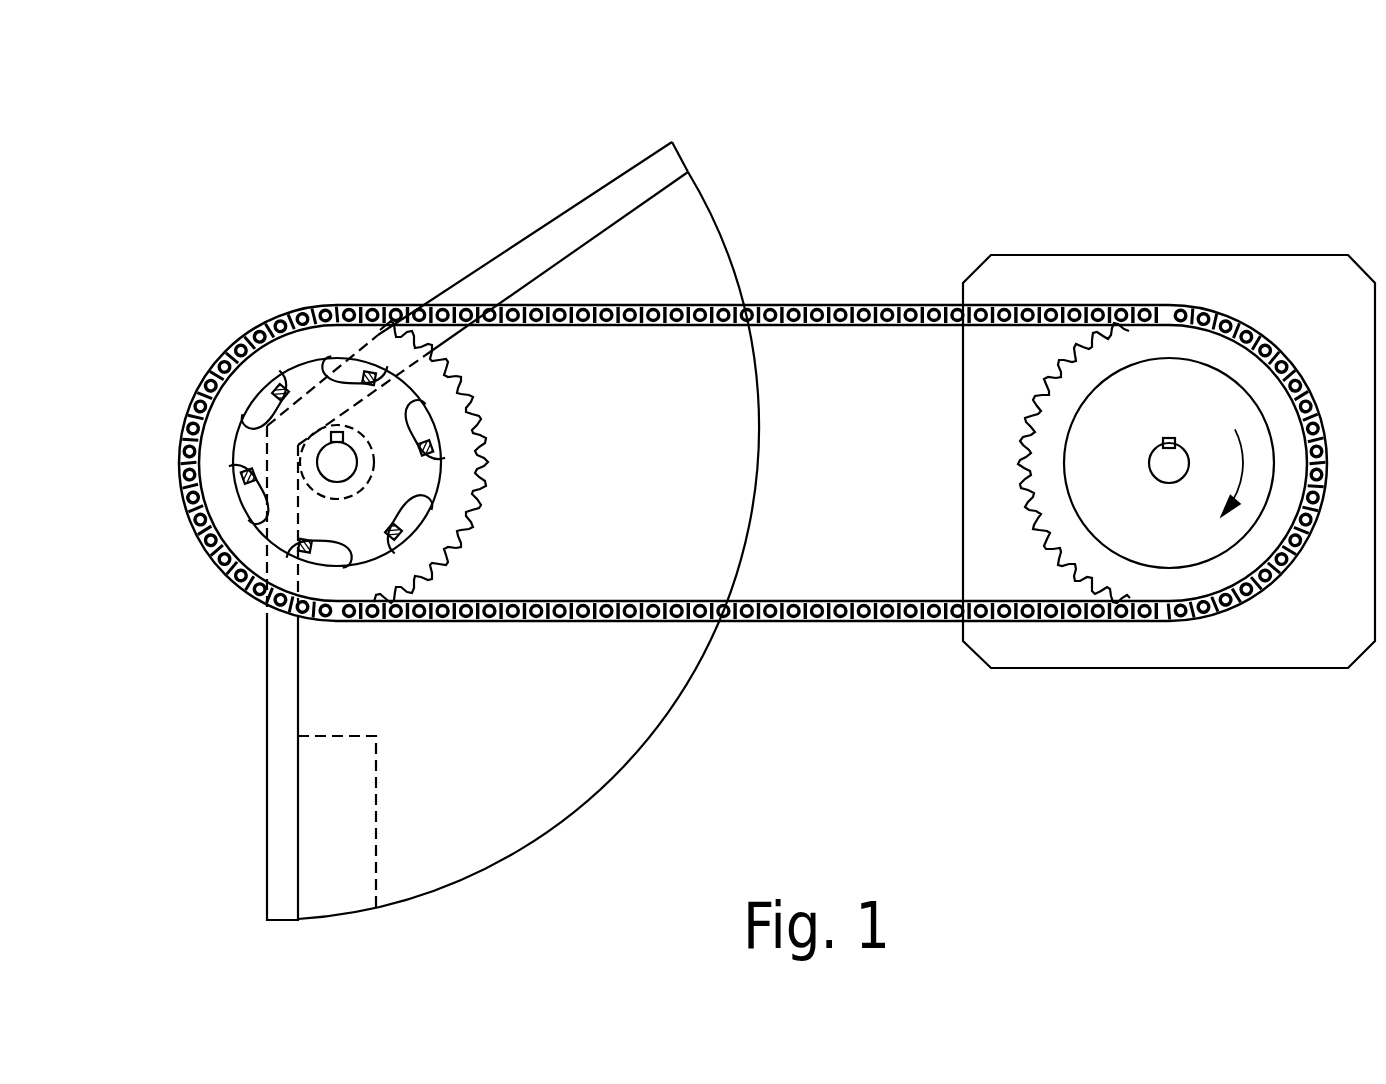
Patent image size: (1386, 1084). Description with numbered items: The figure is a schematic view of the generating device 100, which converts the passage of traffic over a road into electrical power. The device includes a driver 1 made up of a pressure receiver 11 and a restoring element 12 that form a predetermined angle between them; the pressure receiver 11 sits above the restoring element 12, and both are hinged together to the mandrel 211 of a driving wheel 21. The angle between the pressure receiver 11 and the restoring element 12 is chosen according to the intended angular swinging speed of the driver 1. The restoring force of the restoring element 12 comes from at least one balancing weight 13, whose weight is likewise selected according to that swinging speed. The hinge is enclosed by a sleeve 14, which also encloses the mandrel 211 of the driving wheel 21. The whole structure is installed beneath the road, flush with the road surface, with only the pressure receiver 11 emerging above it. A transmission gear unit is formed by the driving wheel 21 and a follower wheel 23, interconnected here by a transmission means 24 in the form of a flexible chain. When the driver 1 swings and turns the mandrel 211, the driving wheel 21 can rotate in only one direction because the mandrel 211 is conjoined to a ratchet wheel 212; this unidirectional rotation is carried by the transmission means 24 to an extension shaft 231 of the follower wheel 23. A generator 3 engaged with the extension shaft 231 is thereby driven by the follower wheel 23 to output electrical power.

The generating device 100 is at (831, 192).
The driver 1 is at (516, 215).
The pressure receiver 11 is at (682, 150).
The restoring element 12 is at (282, 873).
The balancing weight 13 is at (348, 830).
The sleeve 14 is at (370, 468).
The driving wheel 21 is at (232, 403).
The mandrel 211 is at (330, 472).
The ratchet wheel 212 is at (303, 380).
The follower wheel 23 is at (1237, 562).
The extension shaft 231 is at (1172, 482).
The transmission means 24 is at (828, 328).
The generator 3 is at (1068, 648).